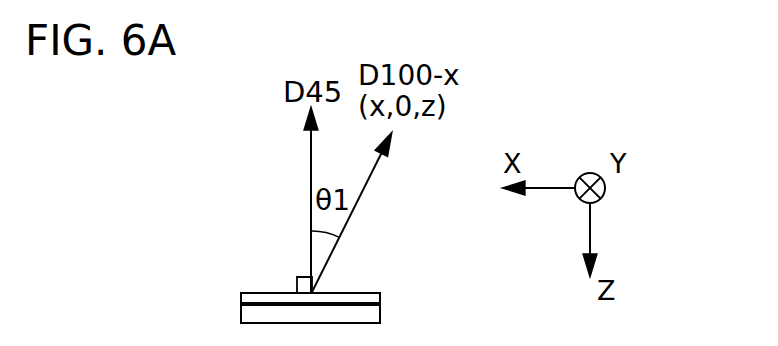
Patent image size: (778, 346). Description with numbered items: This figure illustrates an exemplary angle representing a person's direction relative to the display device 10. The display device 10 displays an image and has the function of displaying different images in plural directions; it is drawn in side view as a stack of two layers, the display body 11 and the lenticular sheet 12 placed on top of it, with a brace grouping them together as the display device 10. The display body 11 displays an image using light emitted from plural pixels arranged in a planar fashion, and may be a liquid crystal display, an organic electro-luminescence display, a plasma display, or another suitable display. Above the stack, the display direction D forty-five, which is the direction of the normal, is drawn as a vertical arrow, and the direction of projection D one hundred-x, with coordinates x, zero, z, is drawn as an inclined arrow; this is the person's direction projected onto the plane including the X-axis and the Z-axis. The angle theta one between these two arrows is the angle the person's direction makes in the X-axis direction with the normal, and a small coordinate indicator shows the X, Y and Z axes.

The display device 10 is at (393, 301).
The display body 11 is at (355, 320).
The lenticular sheet 12 is at (380, 296).